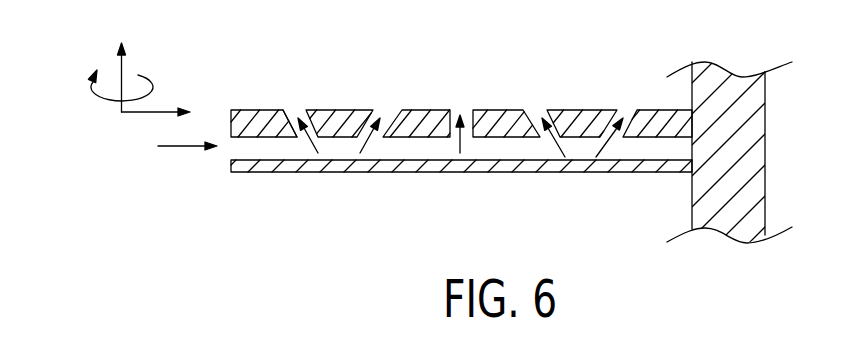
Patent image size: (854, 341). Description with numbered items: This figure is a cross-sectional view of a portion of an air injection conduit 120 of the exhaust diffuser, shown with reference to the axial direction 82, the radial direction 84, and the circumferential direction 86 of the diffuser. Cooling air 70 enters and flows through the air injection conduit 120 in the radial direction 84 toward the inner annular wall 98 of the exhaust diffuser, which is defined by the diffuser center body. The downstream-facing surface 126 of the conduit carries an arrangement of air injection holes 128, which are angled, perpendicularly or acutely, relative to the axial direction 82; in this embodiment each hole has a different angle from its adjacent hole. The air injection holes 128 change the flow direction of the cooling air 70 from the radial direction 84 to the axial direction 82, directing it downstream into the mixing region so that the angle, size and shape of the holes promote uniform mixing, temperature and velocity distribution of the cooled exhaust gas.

The cooling air 70 is at (183, 146).
The axial direction 82 is at (124, 87).
The radial direction 84 is at (150, 113).
The circumferential direction 86 is at (97, 101).
The inner annular wall 98 is at (692, 195).
The air injection conduit 120 is at (243, 160).
The downstream-facing surface 126 is at (334, 109).
The air injection holes 128 is at (285, 100).